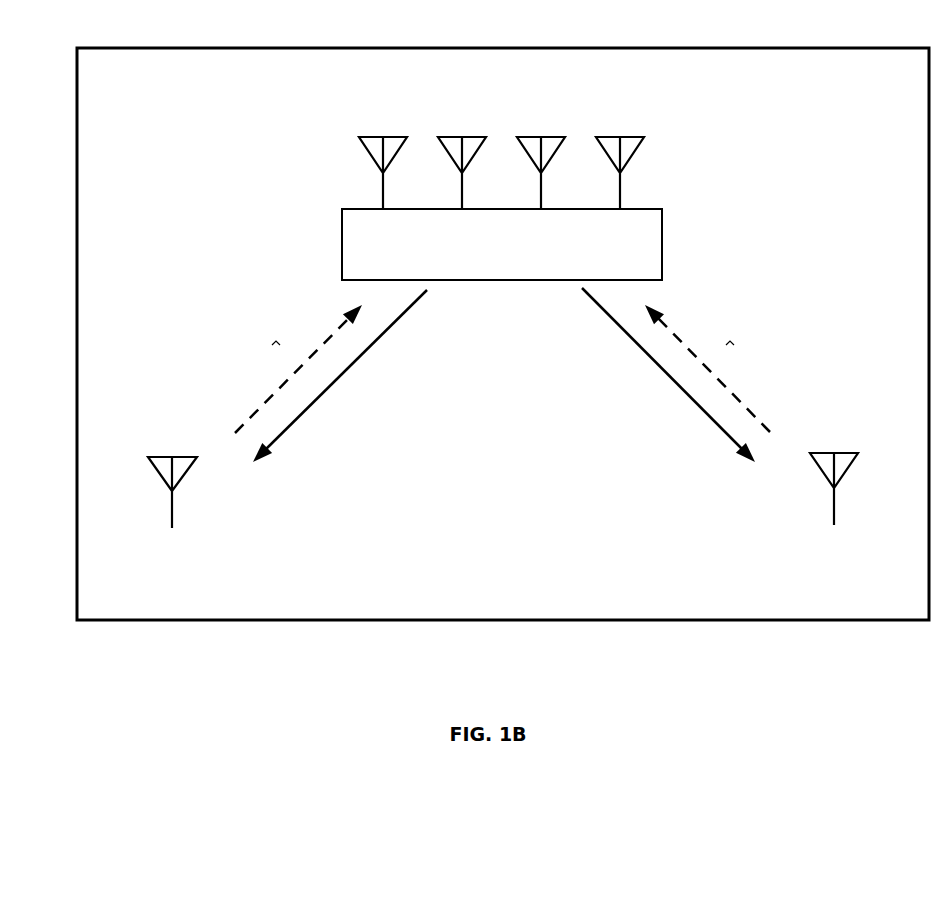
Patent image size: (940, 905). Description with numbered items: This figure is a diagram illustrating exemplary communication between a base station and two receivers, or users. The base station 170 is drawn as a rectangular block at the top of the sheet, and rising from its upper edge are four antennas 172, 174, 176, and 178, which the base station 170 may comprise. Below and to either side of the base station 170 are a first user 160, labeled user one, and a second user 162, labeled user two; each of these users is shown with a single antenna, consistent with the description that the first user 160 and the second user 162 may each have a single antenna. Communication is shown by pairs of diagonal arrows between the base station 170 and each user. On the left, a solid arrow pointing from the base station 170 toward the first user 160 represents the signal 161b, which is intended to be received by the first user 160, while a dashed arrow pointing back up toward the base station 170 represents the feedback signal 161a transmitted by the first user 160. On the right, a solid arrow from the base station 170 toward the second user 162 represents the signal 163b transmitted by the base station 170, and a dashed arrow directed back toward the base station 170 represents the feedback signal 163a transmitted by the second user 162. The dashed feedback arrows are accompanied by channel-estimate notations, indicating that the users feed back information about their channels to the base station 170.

The first user 160 is at (167, 452).
The second user 162 is at (840, 452).
The base station 170 is at (342, 254).
The antenna 172 is at (360, 135).
The antenna 174 is at (464, 135).
The antenna 176 is at (550, 135).
The antenna 178 is at (631, 135).
The feedback signal 161a is at (306, 348).
The signal 161b is at (347, 370).
The feedback signal 163a is at (768, 418).
The signal 163b is at (662, 375).